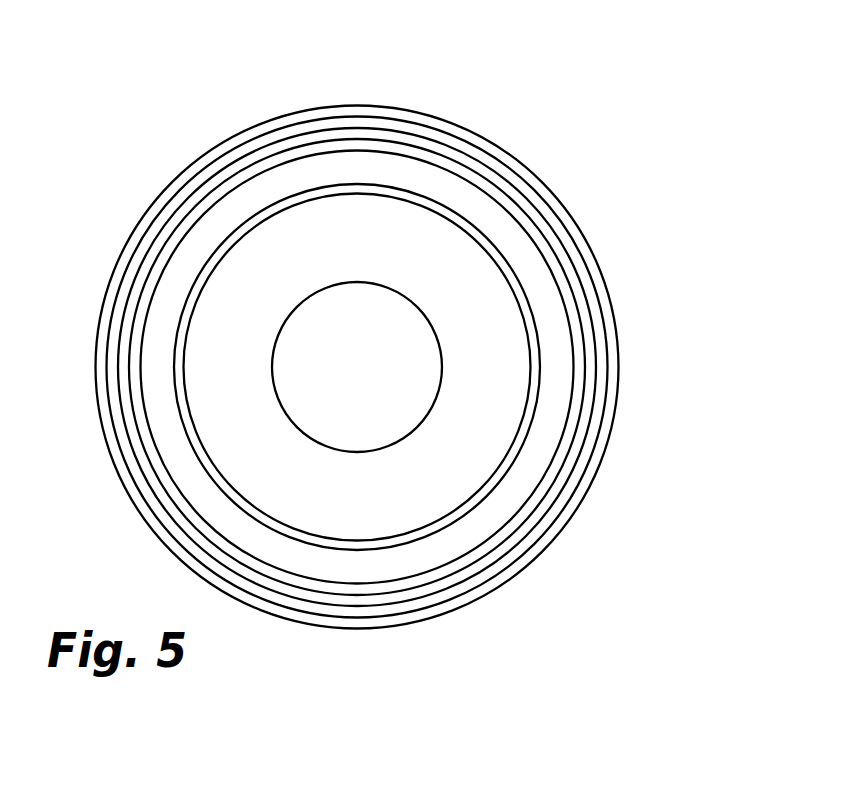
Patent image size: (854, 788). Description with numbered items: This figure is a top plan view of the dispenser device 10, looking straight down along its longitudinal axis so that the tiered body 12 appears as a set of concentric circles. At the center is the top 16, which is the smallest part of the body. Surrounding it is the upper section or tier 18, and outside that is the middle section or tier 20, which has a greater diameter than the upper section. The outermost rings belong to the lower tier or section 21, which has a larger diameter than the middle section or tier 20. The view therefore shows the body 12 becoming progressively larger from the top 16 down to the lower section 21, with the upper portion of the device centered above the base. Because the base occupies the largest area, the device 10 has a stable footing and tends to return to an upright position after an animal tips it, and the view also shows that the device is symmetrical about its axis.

The dispenser device 10 is at (635, 153).
The body 12 is at (653, 348).
The top 16 is at (378, 387).
The upper section or tier 18 is at (382, 246).
The middle section or tier 20 is at (428, 182).
The lower tier or section 21 is at (363, 123).